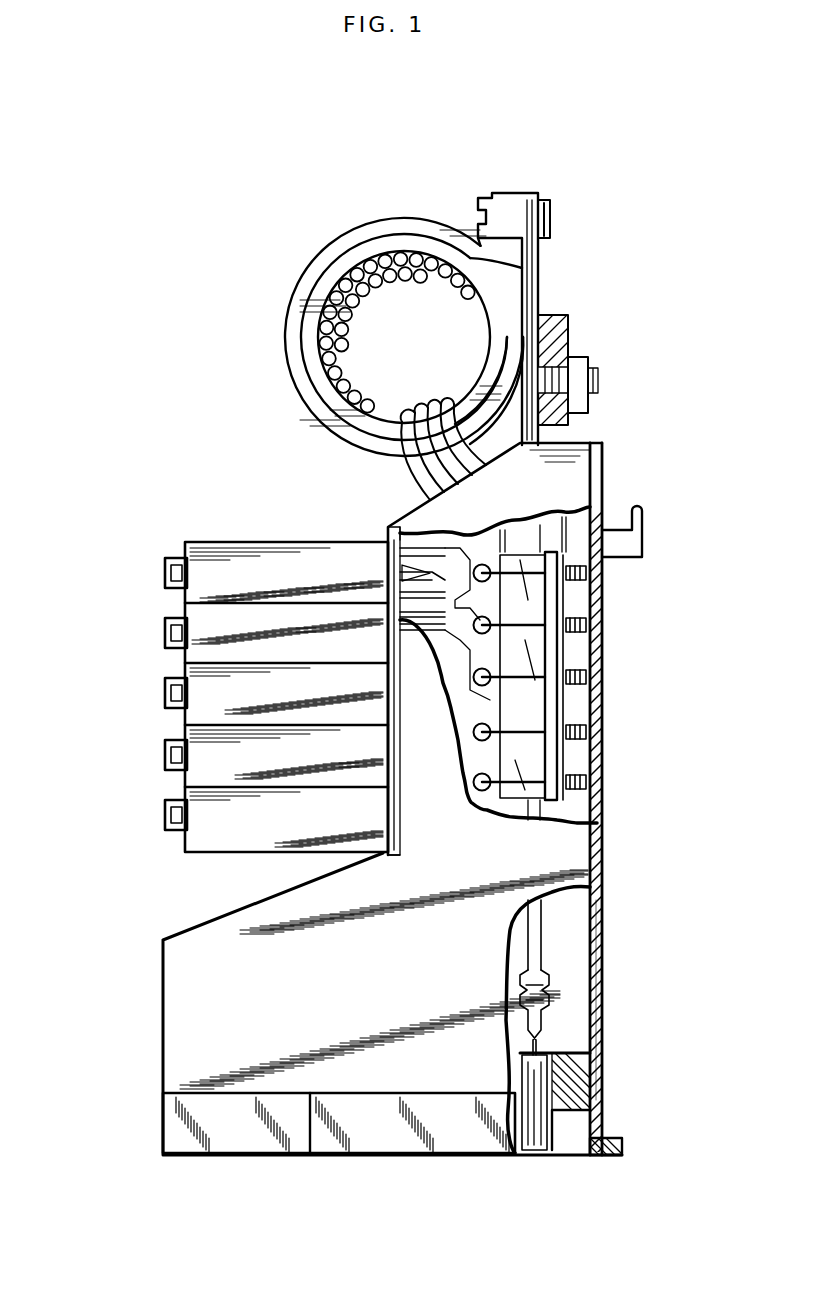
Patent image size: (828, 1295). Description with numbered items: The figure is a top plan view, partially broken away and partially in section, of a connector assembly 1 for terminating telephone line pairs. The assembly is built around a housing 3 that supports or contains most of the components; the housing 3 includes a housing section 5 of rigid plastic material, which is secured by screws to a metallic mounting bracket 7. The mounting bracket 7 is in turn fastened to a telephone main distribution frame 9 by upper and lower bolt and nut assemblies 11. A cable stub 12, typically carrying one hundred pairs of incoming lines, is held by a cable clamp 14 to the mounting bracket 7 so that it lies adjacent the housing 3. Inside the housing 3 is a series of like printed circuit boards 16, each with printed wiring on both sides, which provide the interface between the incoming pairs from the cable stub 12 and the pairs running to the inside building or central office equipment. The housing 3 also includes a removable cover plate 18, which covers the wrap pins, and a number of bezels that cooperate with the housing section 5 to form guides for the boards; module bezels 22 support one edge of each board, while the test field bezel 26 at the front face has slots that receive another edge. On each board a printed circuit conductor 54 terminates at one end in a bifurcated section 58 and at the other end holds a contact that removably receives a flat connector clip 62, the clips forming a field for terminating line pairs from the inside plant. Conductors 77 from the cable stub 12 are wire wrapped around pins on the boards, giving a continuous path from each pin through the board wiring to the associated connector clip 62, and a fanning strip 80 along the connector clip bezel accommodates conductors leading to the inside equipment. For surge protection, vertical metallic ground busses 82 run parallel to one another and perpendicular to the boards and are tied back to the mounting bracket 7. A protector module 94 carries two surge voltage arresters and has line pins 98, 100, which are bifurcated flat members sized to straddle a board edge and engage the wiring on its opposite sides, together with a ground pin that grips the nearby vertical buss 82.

The connector assembly 1 is at (633, 258).
The housing 3 is at (606, 782).
The housing section 5 is at (582, 484).
The mounting bracket 7 is at (541, 292).
The telephone main distribution frame 9 is at (574, 334).
The bolt and nut assemblies 11 is at (600, 380).
The cable stub 12 is at (312, 343).
The cable clamp 14 is at (322, 262).
The printed circuit boards 16 is at (540, 518).
The cover plate 18 is at (606, 1008).
The module bezels 22 is at (398, 834).
The test field bezel 26 is at (240, 1155).
The printed circuit conductor 54 is at (538, 954).
The bifurcated section 58 is at (466, 540).
The connector clip 62 is at (552, 1157).
The conductors 77 is at (412, 474).
The fanning strip 80 is at (624, 1146).
The vertical ground busses 82 is at (432, 667).
The module 94 is at (152, 806).
The line pin 98 is at (392, 581).
The line pin 100 is at (386, 526).